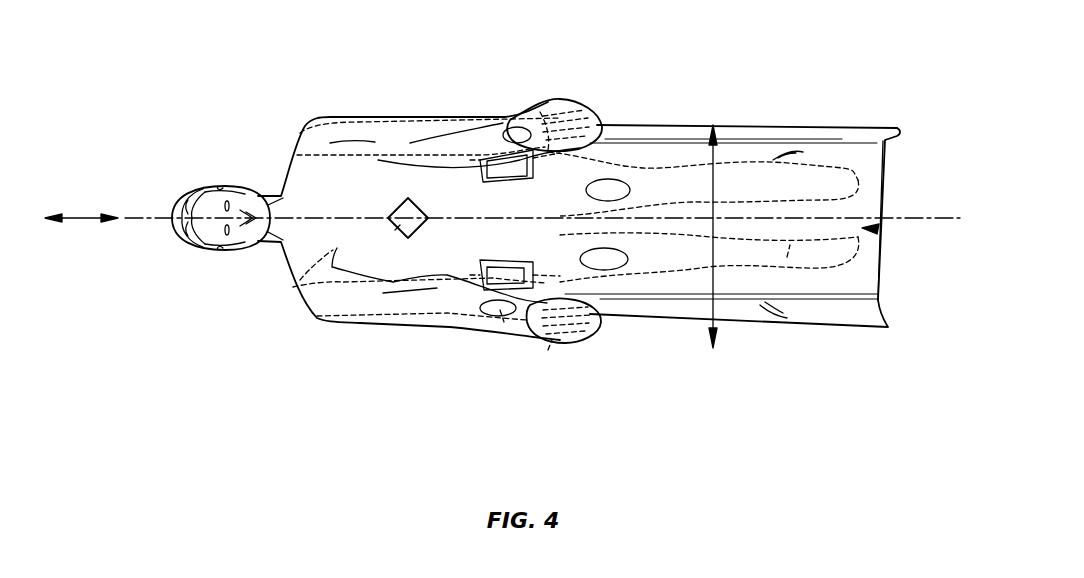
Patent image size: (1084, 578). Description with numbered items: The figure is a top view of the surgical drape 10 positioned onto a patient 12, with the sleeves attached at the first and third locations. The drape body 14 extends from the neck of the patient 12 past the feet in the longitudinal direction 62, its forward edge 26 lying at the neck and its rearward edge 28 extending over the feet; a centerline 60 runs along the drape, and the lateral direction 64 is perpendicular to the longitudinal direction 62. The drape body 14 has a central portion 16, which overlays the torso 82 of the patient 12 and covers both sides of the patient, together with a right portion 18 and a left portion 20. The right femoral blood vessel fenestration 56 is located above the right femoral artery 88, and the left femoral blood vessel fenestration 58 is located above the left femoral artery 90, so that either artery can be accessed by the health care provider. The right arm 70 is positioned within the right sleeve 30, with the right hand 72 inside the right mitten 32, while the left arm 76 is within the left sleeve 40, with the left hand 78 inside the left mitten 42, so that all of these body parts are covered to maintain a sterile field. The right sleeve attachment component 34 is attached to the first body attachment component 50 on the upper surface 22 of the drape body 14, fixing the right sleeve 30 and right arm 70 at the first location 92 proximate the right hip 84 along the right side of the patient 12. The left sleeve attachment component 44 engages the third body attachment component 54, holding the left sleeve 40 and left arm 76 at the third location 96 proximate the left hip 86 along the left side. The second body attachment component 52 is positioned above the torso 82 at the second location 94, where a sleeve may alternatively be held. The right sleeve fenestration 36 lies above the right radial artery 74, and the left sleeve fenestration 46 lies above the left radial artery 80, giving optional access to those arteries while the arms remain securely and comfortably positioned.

The surgical drape 10 is at (268, 85).
The patient 12 is at (787, 257).
The drape body 14 is at (872, 277).
The central portion 16 is at (877, 183).
The right portion 18 is at (830, 320).
The left portion 20 is at (808, 158).
The upper surface 22 is at (876, 230).
The forward edge 26 is at (277, 250).
The rearward edge 28 is at (888, 207).
The right sleeve 30 is at (360, 320).
The right mitten 32 is at (587, 330).
The right sleeve attachment component 34 is at (500, 272).
The right sleeve fenestration 36 is at (505, 330).
The left sleeve 40 is at (403, 117).
The left mitten 42 is at (593, 120).
The left sleeve attachment component 44 is at (524, 163).
The left sleeve fenestration 46 is at (518, 126).
The first body attachment component 50 is at (483, 262).
The second body attachment component 52 is at (398, 230).
The third body attachment component 54 is at (483, 181).
The right femoral blood vessel fenestration 56 is at (617, 263).
The left femoral blood vessel fenestration 58 is at (615, 185).
The centerline 60 is at (147, 222).
The longitudinal direction 62 is at (70, 215).
The lateral direction 64 is at (703, 320).
The right arm 70 is at (427, 313).
The right hand 72 is at (555, 343).
The right radial artery 74 is at (493, 317).
The left arm 76 is at (445, 138).
The left hand 78 is at (570, 125).
The left radial artery 80 is at (506, 130).
The torso 82 is at (300, 282).
The right hip 84 is at (548, 350).
The left hip 86 is at (544, 150).
The right femoral artery 88 is at (603, 263).
The left femoral artery 90 is at (617, 180).
The first location 92 is at (518, 275).
The second location 94 is at (403, 207).
The third location 96 is at (498, 168).